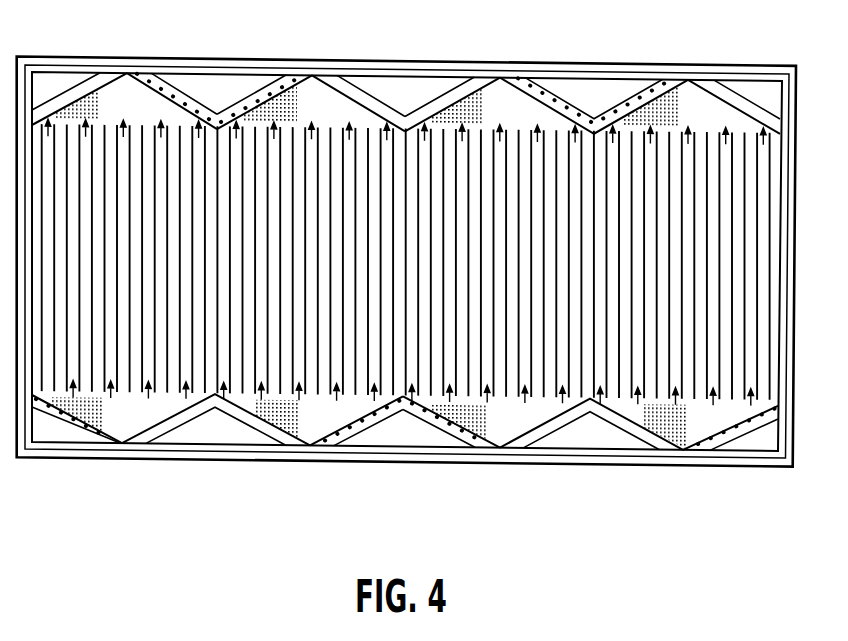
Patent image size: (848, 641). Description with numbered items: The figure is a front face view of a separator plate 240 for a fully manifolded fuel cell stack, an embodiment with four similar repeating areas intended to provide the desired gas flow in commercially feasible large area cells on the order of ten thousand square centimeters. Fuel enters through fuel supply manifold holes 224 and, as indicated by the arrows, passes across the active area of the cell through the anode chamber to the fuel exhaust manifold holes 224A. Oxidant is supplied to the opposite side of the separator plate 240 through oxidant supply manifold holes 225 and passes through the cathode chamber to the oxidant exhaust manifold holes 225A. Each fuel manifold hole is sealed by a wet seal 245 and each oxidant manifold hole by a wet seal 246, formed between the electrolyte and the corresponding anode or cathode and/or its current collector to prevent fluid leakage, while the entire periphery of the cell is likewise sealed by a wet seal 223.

The wet seal 223 is at (795, 218).
The fuel supply manifold holes 224 is at (72, 440).
The fuel exhaust manifold holes 224A is at (204, 82).
The oxidant supply manifold holes 225 is at (218, 432).
The oxidant exhaust manifold holes 225A is at (57, 83).
The separator plate 240 is at (120, 455).
The wet seal 245 is at (256, 84).
The wet seal 246 is at (362, 78).